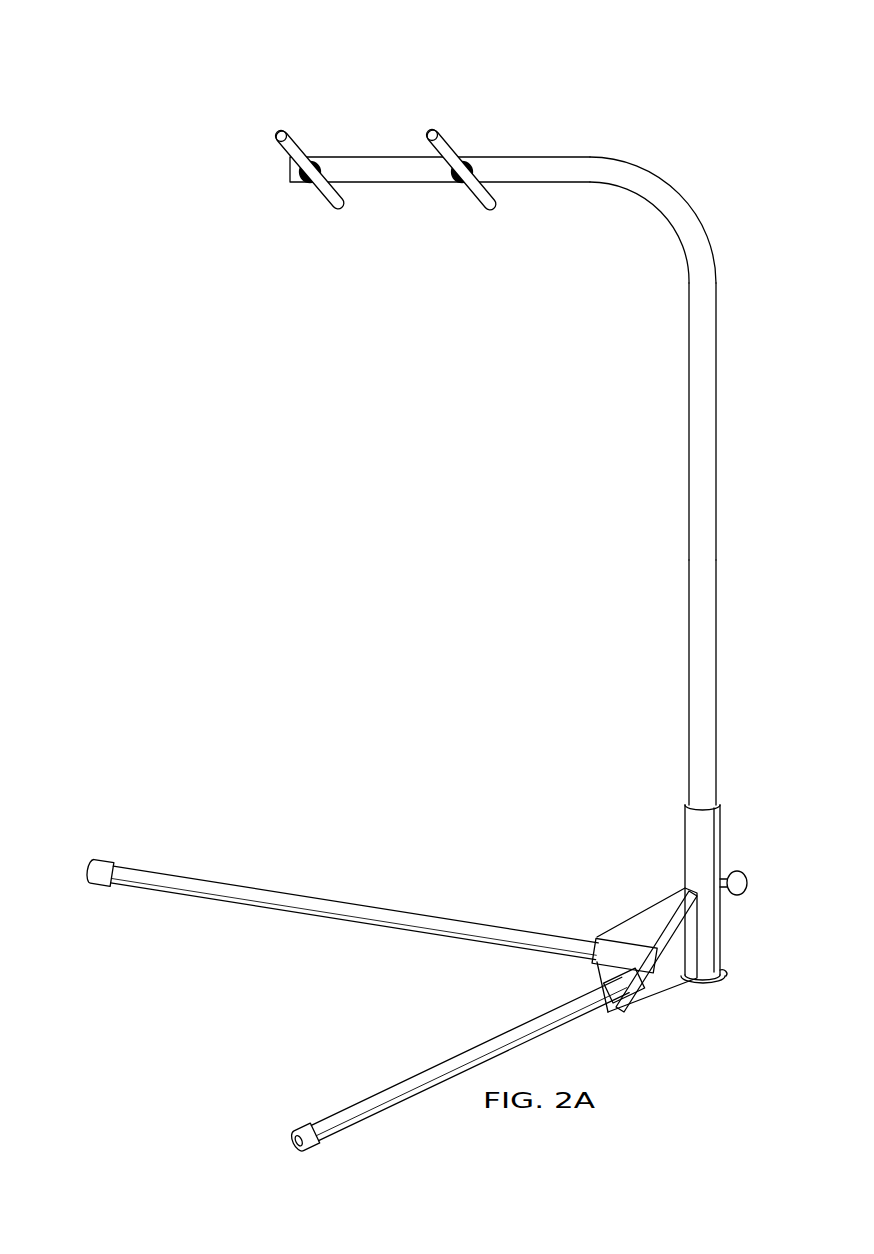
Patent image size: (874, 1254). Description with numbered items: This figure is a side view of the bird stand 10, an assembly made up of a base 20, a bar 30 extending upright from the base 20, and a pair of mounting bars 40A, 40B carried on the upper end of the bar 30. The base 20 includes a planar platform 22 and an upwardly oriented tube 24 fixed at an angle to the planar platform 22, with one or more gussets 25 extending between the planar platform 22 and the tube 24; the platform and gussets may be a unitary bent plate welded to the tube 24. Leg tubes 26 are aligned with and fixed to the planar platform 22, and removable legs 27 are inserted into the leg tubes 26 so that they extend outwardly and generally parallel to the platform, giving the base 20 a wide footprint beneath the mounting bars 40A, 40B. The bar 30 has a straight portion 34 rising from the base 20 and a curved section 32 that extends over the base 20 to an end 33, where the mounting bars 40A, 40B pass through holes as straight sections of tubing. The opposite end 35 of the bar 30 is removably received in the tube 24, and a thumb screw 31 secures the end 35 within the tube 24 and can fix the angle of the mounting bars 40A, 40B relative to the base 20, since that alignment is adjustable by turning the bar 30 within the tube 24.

The bird stand 10 is at (141, 104).
The base 20 is at (729, 841).
The planar platform 22 is at (600, 967).
The upwardly oriented tube 24 is at (686, 828).
The gusset 25 is at (663, 907).
The leg tube 26 is at (626, 938).
The removable leg 27 is at (301, 895).
The bar 30 is at (700, 385).
The thumb screw 31 is at (740, 895).
The curved section 32 is at (672, 197).
The end of bar 33 is at (403, 173).
The straight portion 34 is at (700, 590).
The end of bar 35 is at (726, 980).
The mounting bar 40A is at (292, 140).
The mounting bar 40B is at (436, 140).